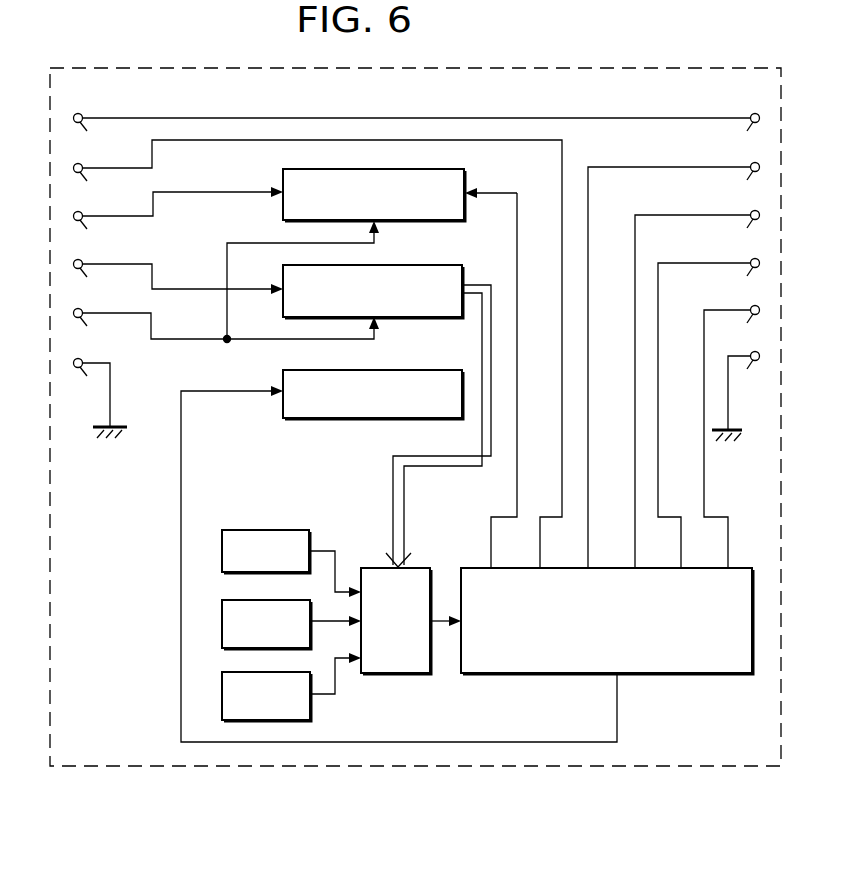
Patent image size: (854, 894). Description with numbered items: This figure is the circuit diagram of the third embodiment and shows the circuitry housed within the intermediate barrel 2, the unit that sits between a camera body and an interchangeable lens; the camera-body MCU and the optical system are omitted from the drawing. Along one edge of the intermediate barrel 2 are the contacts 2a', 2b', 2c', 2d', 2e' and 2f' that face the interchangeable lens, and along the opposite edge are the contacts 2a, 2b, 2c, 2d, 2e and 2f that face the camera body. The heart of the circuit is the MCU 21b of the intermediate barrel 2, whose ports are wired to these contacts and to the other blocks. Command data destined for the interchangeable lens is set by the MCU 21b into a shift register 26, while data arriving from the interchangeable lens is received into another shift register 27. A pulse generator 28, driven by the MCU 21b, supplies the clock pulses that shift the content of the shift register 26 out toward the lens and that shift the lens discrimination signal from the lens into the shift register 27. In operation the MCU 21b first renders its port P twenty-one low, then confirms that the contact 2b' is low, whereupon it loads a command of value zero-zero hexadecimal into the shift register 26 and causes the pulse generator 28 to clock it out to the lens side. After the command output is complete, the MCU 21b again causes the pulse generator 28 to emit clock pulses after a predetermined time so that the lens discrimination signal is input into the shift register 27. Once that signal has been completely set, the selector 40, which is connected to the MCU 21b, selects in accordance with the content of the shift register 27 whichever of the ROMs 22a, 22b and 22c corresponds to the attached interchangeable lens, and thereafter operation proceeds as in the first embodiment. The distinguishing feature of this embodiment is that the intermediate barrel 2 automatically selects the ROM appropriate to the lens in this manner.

The intermediate barrel 2 is at (695, 760).
The terminal 2a is at (752, 136).
The terminal 2b is at (678, 366).
The terminal 2c is at (700, 390).
The terminal 2d is at (713, 414).
The terminal 2e is at (735, 437).
The ground terminal 2f is at (736, 397).
The terminal 2a' is at (412, 136).
The contact 2b' is at (318, 354).
The terminal 2c' is at (179, 220).
The terminal 2d' is at (179, 281).
The terminal 2e' is at (227, 286).
The ground terminal 2f' is at (101, 399).
The shift register 26 is at (458, 170).
The shift register 27 is at (455, 265).
The pulse generator 28 is at (404, 369).
The ROM 22a is at (222, 540).
The ROM 22b is at (222, 616).
The ROM 22c is at (222, 690).
The selector 40 is at (382, 668).
The MCU 21b is at (523, 673).